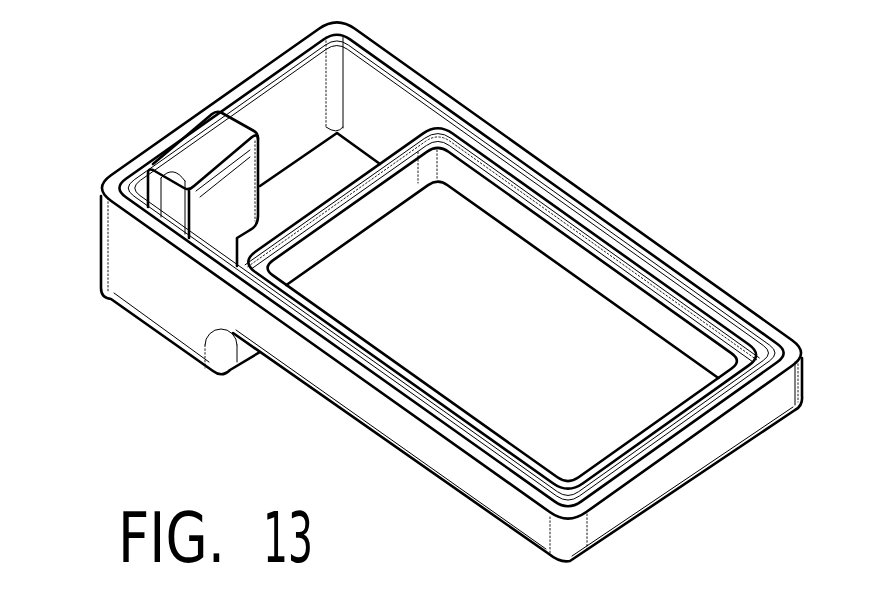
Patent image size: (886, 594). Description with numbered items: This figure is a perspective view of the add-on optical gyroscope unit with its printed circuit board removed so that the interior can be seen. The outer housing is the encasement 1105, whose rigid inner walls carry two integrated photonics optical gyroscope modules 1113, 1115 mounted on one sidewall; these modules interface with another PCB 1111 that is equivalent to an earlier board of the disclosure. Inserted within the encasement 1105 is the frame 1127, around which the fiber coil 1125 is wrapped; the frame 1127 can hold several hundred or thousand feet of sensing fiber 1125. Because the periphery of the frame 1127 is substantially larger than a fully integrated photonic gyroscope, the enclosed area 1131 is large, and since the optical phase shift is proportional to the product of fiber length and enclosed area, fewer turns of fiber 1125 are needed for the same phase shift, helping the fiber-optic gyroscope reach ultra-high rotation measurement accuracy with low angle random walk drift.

The encasement 1105 is at (698, 268).
The PCB 1111 is at (348, 155).
The integrated photonics optical gyroscope module 1113 is at (209, 155).
The integrated photonics optical gyroscope module 1115 is at (168, 200).
The fiber coil 1125 is at (497, 163).
The frame 1127 is at (572, 232).
The enclosed area 1131 is at (574, 386).